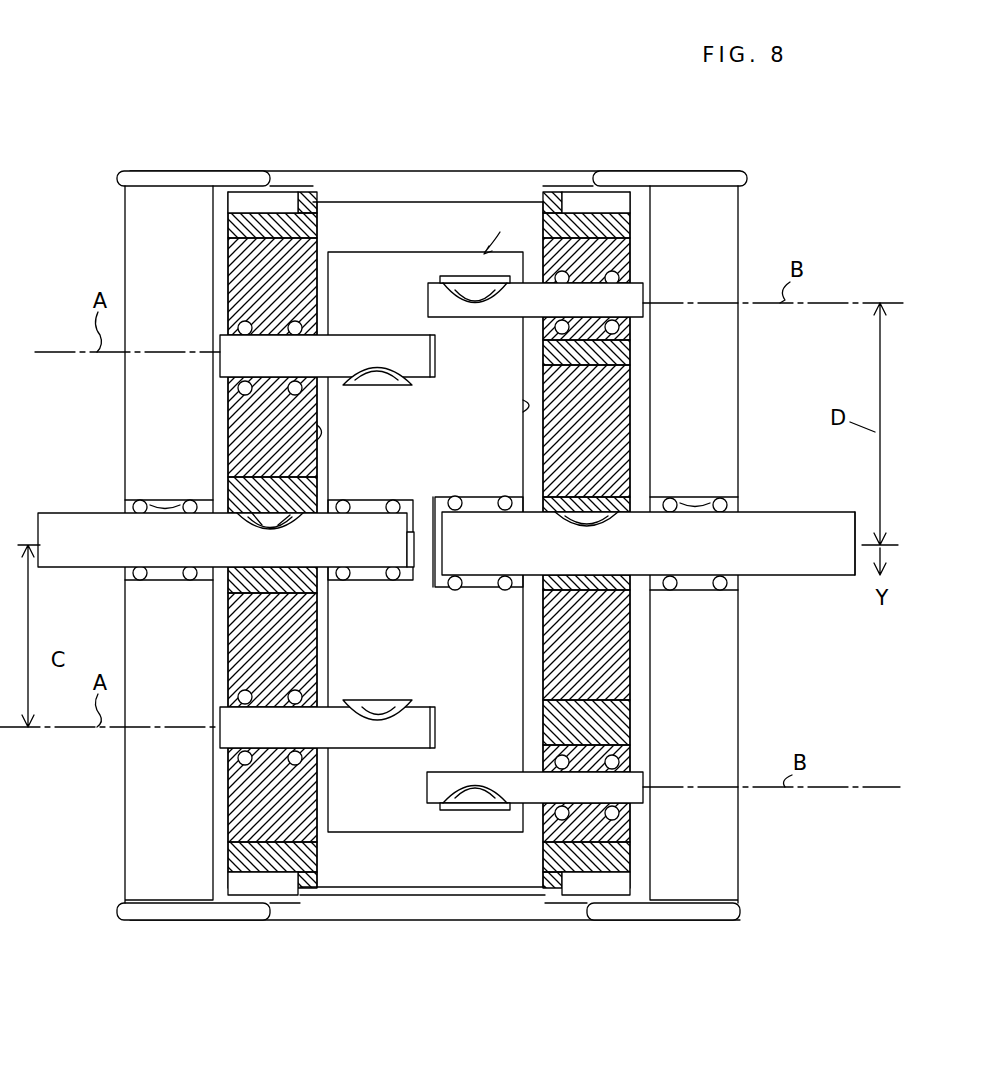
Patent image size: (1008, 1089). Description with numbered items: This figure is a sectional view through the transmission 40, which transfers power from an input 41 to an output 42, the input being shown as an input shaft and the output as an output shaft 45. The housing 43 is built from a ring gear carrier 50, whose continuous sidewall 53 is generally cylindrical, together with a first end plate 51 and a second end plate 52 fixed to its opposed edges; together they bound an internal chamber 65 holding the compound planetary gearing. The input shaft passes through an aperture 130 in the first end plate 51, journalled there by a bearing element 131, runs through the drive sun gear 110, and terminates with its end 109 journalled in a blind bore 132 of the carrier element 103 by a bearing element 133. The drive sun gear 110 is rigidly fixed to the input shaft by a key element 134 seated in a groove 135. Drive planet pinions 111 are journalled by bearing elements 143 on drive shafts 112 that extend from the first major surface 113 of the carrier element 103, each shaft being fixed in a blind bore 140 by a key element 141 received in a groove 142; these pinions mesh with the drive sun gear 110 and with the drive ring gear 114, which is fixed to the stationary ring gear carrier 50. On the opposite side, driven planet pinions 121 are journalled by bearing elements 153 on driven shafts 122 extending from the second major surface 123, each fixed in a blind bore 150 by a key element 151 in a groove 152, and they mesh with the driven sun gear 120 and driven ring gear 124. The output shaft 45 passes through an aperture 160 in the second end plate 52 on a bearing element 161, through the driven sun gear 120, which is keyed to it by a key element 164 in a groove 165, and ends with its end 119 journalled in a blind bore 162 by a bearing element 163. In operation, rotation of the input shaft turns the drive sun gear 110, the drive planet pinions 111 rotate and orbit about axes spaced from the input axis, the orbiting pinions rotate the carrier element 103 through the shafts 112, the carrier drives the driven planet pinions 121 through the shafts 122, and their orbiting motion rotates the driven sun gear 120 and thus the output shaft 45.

The transmission 40 is at (218, 125).
The input 41 is at (86, 582).
The output 42 is at (805, 585).
The housing 43 is at (430, 159).
The output shaft 45 is at (802, 520).
The ring gear carrier 50 is at (446, 922).
The first end plate 51 is at (140, 752).
The second end plate 52 is at (738, 727).
The continuous sidewall 53 is at (412, 910).
The internal chamber 65 is at (432, 231).
The carrier element 103 is at (504, 230).
The end of input shaft 109 is at (432, 497).
The drive sun gear 110 is at (322, 480).
The drive planet pinions 111 is at (303, 660).
The drive shafts 112 is at (352, 785).
The first major surface 113 is at (322, 444).
The drive ring gear 114 is at (310, 860).
The end of output shaft 119 is at (430, 545).
The driven sun gear 120 is at (615, 412).
The driven planet pinions 121 is at (630, 828).
The driven shafts 122 is at (610, 788).
The second major surface 123 is at (522, 405).
The driven ring gear 124 is at (618, 868).
The aperture 130 is at (178, 500).
The bearing element 131 is at (150, 580).
The blind bore 132 is at (368, 582).
The bearing element 133 is at (353, 500).
The key element 134 is at (268, 530).
The groove 135 is at (300, 528).
The blind bore 140 is at (352, 700).
The key element 141 is at (410, 708).
The groove 142 is at (418, 712).
The bearing element 143 is at (290, 760).
The blind bore 150 is at (495, 770).
The key element 151 is at (472, 812).
The groove 152 is at (482, 785).
The bearing element 153 is at (625, 720).
The aperture 160 is at (705, 497).
The bearing element 161 is at (672, 590).
The blind bore 162 is at (487, 590).
The bearing element 163 is at (500, 496).
The key element 164 is at (603, 470).
The groove 165 is at (612, 525).